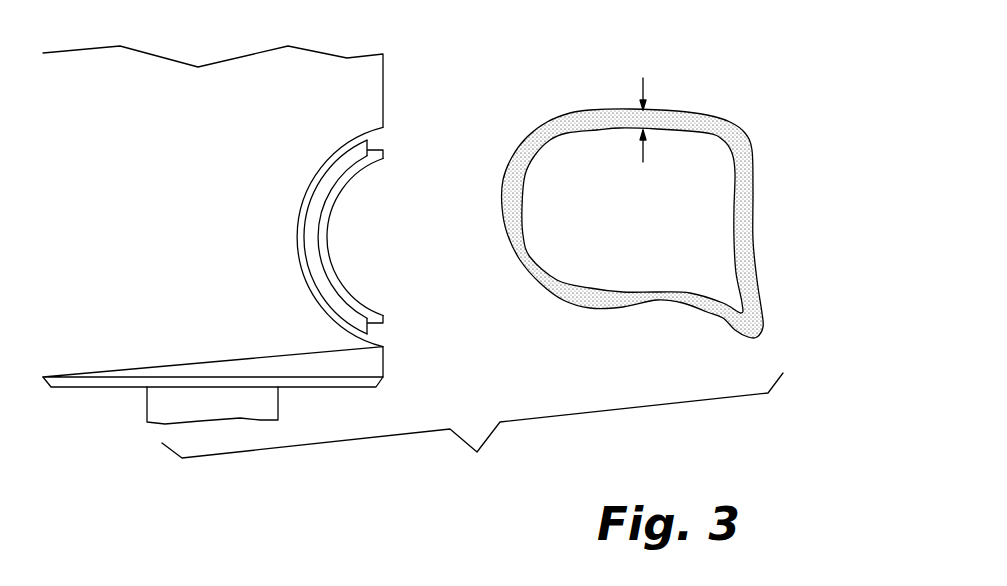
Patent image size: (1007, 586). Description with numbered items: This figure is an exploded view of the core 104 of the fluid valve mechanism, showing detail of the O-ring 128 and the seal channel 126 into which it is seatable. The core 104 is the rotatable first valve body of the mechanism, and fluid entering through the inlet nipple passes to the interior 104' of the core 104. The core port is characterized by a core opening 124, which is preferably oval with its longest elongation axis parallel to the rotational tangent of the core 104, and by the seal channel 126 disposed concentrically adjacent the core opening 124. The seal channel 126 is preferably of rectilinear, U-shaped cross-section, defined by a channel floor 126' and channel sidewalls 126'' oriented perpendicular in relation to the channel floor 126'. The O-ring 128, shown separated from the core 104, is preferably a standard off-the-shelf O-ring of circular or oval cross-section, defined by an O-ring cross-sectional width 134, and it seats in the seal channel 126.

The core 104 is at (413, 250).
The interior of the core 104' is at (258, 394).
The core opening 124 is at (347, 245).
The seal channel 126 is at (357, 237).
The channel floor 126' is at (417, 140).
The channel sidewalls 126'' is at (376, 291).
The O-ring 128 is at (627, 312).
The O-ring cross-sectional width 134 is at (644, 118).